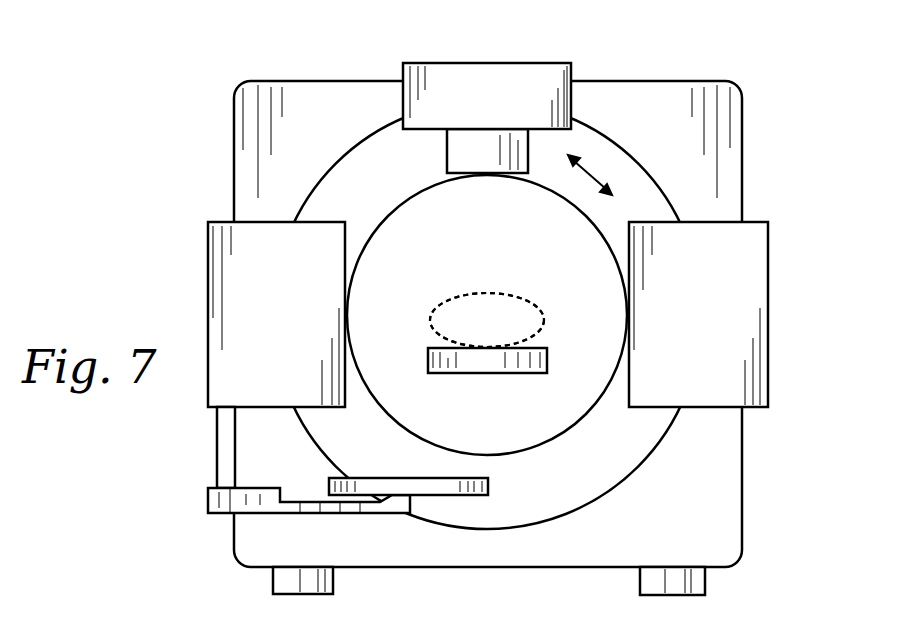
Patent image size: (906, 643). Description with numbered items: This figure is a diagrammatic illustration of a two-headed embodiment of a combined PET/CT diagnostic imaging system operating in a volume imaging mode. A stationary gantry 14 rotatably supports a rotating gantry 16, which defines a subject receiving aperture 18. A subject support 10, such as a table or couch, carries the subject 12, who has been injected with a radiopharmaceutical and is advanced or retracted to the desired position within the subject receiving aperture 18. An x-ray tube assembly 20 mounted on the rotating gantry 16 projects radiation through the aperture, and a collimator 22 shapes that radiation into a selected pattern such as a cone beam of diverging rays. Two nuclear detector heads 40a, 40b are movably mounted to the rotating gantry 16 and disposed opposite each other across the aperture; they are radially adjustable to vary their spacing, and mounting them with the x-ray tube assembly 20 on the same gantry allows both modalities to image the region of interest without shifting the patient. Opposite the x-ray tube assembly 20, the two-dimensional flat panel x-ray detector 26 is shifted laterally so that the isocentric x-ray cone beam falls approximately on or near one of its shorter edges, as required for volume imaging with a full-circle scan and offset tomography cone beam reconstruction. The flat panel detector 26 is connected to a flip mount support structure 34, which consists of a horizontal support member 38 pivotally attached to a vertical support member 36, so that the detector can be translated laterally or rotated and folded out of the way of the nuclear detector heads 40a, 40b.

The subject support 10 is at (490, 375).
The subject 12 is at (490, 291).
The stationary gantry 14 is at (722, 492).
The rotating gantry 16 is at (623, 458).
The subject receiving aperture 18 is at (513, 315).
The x-ray tube assembly 20 is at (503, 82).
The collimator 22 is at (455, 148).
The x-ray detector 26 is at (493, 567).
The flip mount support structure 34 is at (315, 521).
The vertical support member 36 is at (217, 452).
The horizontal support member 38 is at (207, 504).
The nuclear detector head 40a is at (208, 315).
The nuclear detector head 40b is at (768, 316).